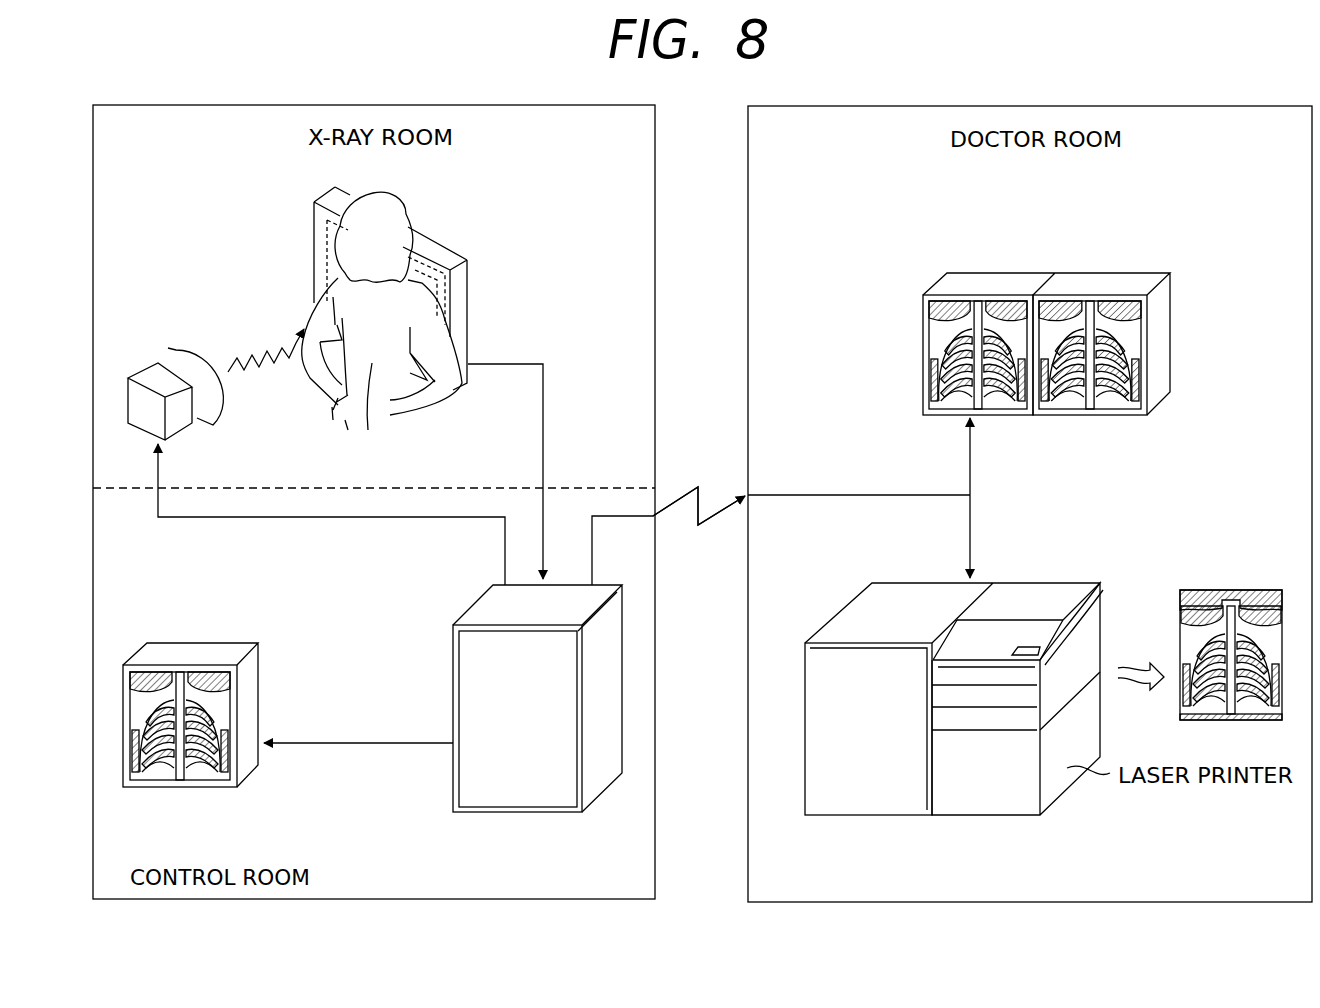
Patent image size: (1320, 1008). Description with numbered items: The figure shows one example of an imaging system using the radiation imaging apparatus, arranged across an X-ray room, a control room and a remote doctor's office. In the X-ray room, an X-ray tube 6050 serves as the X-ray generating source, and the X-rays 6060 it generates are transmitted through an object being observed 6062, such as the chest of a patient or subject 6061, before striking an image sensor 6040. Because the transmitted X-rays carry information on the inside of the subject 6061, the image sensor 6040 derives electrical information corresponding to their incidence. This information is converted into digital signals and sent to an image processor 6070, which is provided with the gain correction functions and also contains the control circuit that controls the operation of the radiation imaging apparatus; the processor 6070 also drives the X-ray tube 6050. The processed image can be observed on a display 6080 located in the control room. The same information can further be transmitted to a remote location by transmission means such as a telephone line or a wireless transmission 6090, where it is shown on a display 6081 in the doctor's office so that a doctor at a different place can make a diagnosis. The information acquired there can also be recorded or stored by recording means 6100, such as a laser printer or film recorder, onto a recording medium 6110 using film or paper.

The image sensor 6040 is at (455, 293).
The X-ray tube 6050 is at (155, 373).
The X-rays 6060 is at (276, 338).
The subject 6061 is at (402, 200).
The object being observed 6062 is at (382, 377).
The image processor 6070 is at (487, 802).
The display 6080 is at (195, 655).
The display 6081 is at (970, 282).
The wireless transmission 6090 is at (690, 487).
The recording means 6100 is at (862, 805).
The recording medium 6110 is at (1203, 590).